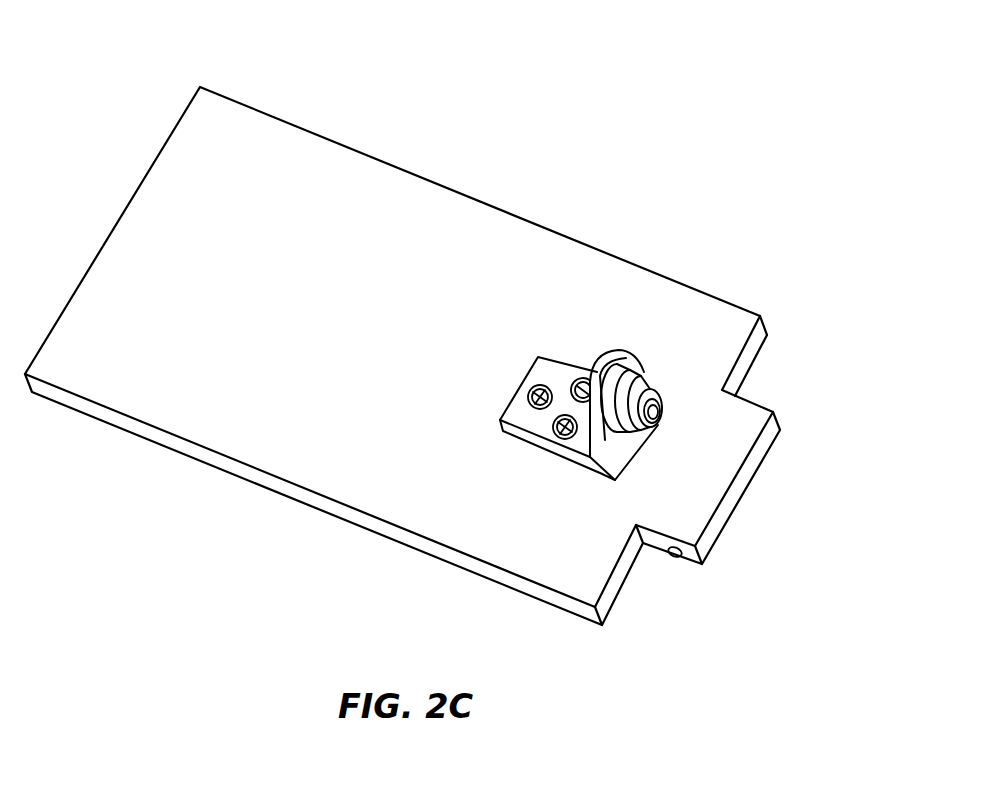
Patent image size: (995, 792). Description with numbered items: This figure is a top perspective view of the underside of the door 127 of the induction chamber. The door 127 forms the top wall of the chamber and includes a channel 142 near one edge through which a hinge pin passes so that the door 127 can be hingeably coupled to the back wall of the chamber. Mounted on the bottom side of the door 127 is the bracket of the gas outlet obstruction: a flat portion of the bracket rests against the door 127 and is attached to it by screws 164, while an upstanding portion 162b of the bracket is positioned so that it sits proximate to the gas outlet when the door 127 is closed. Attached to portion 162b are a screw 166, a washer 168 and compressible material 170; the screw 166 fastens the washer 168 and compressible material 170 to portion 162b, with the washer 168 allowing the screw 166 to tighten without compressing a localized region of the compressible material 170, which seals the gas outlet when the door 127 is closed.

The door 127 is at (329, 138).
The channel 142 is at (673, 557).
The screws 164 is at (527, 400).
The portion of bracket 162b is at (630, 362).
The compressible material 170 is at (650, 378).
The washer 168 is at (652, 398).
The screw 166 is at (659, 412).